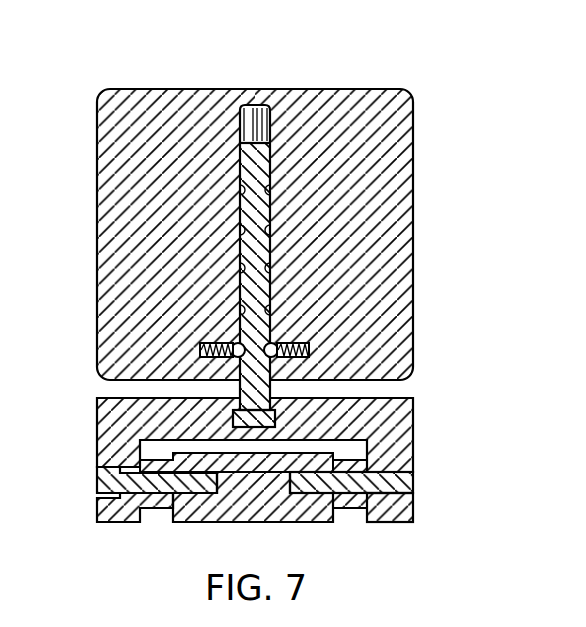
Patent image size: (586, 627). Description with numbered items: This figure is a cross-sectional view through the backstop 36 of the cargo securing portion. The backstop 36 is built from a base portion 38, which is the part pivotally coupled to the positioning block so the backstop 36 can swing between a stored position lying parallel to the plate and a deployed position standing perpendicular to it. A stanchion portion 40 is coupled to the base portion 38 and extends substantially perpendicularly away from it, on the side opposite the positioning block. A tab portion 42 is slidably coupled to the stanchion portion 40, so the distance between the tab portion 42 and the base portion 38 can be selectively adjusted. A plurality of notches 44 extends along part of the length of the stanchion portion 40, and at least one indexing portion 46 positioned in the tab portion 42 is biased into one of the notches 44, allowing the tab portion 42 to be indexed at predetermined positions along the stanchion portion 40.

The backstop 36 is at (403, 92).
The base portion 38 is at (393, 440).
The stanchion portion 40 is at (246, 105).
The tab portion 42 is at (407, 170).
The notches 44 is at (240, 190).
The indexing portion 46 is at (236, 344).